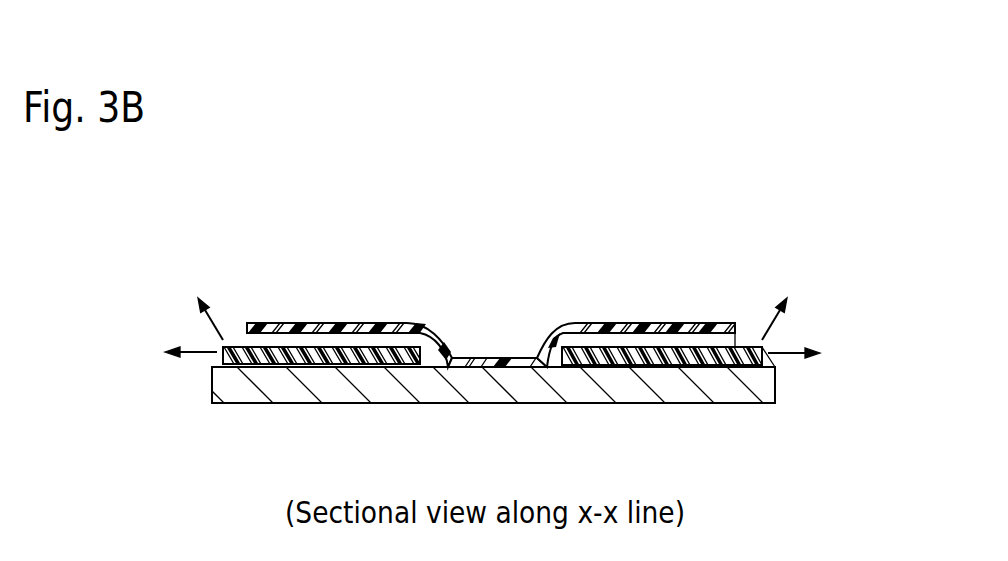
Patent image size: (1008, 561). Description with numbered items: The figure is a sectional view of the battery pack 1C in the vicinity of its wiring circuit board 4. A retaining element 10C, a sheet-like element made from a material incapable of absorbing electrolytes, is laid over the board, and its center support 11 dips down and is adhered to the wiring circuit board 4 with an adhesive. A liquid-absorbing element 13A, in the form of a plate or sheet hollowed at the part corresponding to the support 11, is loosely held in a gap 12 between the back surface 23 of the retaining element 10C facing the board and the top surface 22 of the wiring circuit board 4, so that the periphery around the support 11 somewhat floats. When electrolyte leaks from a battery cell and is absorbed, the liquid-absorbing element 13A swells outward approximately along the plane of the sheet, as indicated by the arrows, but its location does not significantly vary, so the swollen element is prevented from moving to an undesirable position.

The battery pack 1C is at (133, 217).
The wiring circuit board 4 is at (706, 412).
The retaining element 10C is at (632, 322).
The center support 11 is at (511, 357).
The gap 12 is at (731, 340).
The liquid-absorbing element 13A is at (698, 347).
The top surface 22 is at (774, 368).
The back surface 23 is at (250, 335).